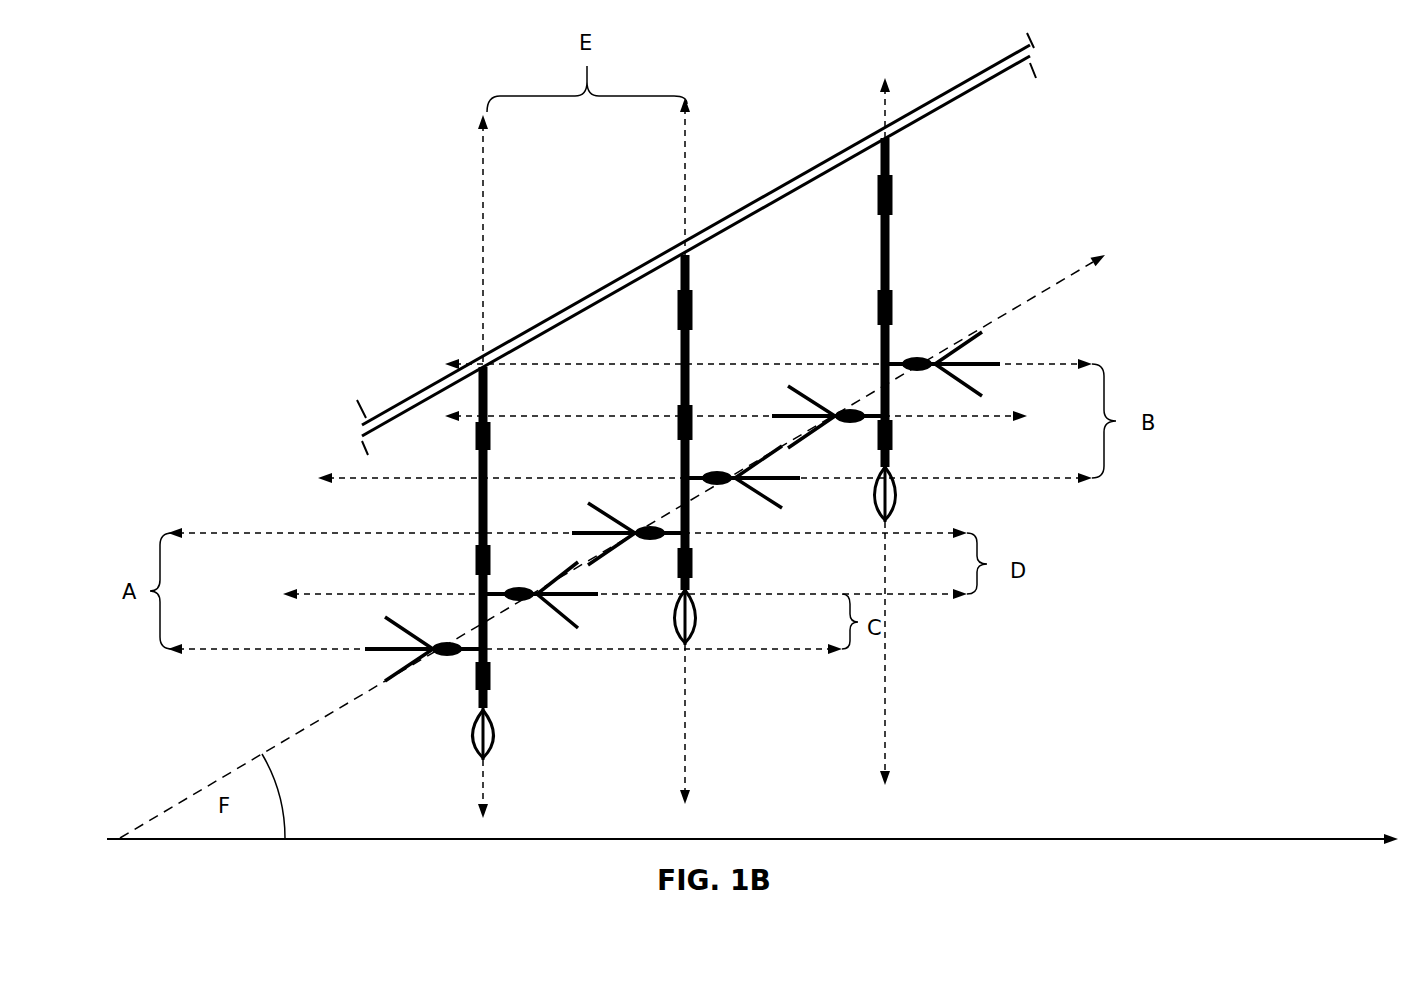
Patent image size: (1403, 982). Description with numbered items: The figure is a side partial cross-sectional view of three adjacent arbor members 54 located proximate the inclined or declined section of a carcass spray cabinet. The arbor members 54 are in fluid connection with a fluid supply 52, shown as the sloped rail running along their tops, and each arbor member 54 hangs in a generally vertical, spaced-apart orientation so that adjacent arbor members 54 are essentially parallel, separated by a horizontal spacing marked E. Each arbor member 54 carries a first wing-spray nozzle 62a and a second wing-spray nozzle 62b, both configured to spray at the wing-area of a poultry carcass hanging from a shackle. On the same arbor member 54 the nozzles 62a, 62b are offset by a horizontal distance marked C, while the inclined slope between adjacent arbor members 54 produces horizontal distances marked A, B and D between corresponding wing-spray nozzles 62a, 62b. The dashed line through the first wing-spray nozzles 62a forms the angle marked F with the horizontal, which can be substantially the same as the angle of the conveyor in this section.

The fluid supply 52 is at (597, 298).
The arbor member 54 is at (481, 490).
The first wing-spray nozzle 62a is at (447, 660).
The second wing-spray nozzle 62b is at (498, 585).